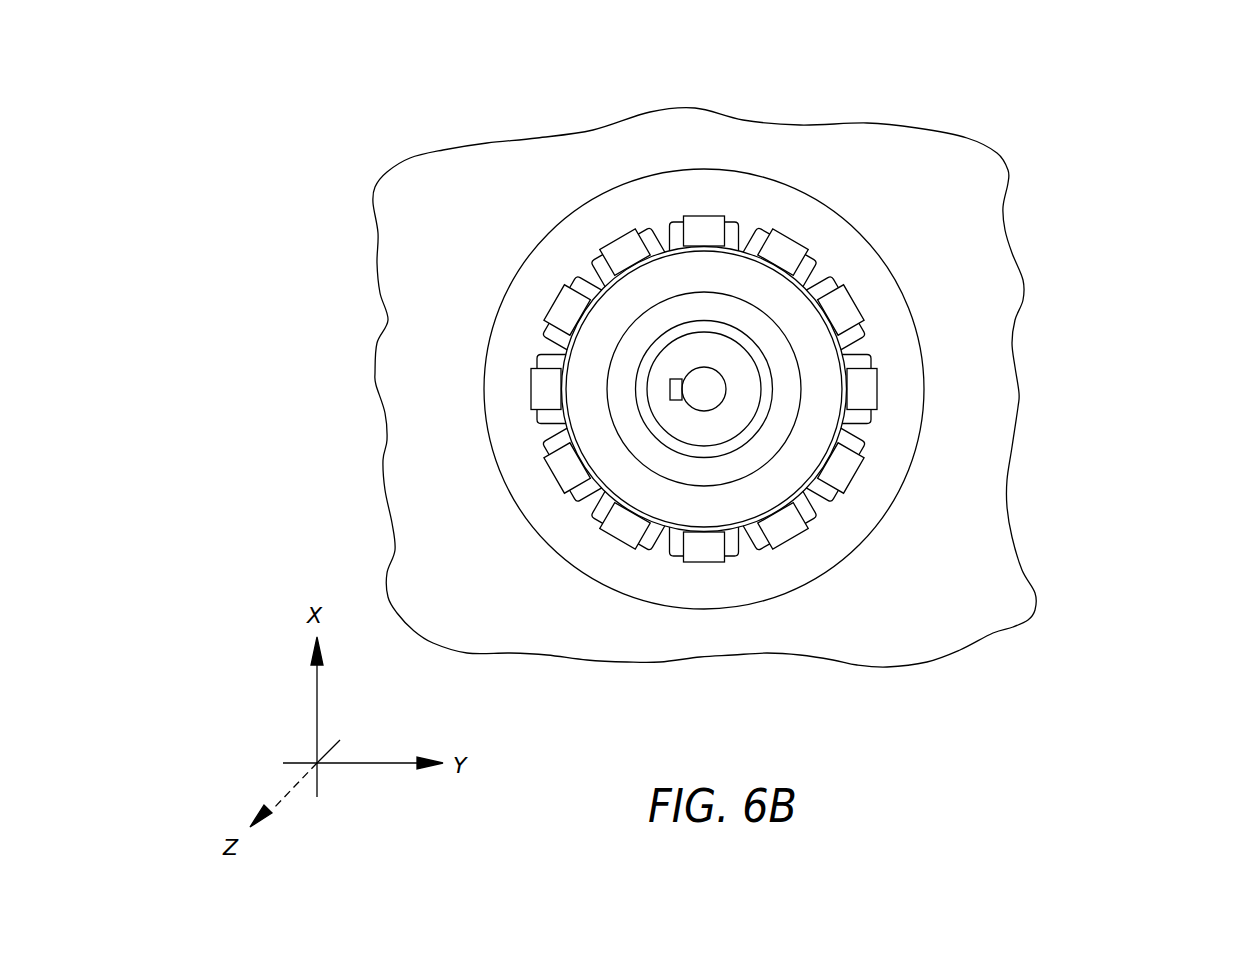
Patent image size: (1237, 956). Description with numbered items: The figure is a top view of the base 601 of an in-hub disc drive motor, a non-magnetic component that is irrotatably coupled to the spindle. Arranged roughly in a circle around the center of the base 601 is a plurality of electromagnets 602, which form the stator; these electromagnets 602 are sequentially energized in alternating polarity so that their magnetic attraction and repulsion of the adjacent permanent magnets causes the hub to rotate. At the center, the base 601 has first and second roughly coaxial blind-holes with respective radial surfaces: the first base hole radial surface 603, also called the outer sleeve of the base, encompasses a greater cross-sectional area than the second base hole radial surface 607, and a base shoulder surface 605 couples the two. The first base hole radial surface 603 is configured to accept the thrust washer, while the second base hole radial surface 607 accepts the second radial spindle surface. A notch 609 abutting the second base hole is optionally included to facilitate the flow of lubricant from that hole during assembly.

The base 601 is at (1132, 118).
The electromagnets 602 is at (535, 388).
The first base hole radial surface 603 is at (767, 408).
The base shoulder surface 605 is at (732, 415).
The second base hole radial surface 607 is at (710, 387).
The notch 609 is at (673, 383).